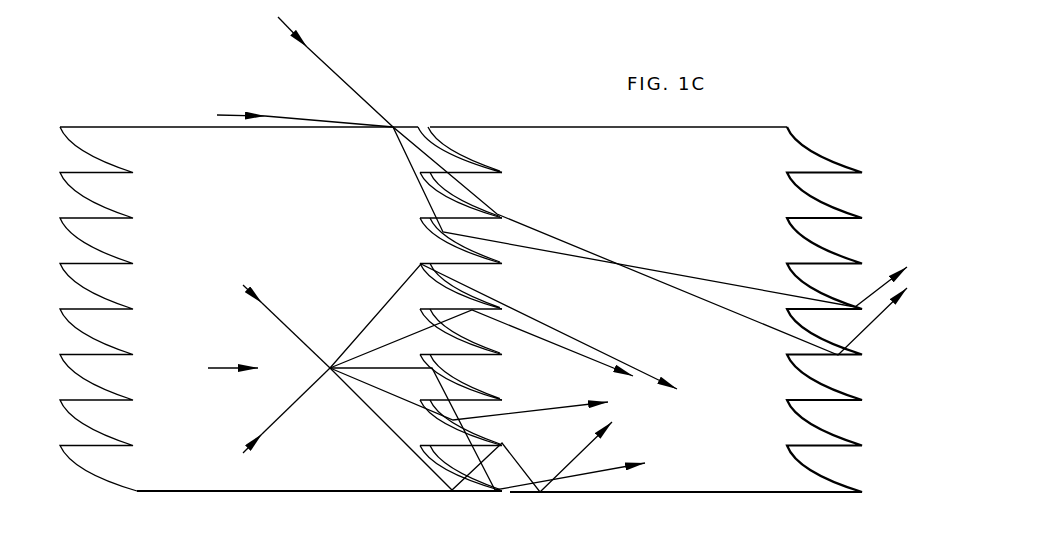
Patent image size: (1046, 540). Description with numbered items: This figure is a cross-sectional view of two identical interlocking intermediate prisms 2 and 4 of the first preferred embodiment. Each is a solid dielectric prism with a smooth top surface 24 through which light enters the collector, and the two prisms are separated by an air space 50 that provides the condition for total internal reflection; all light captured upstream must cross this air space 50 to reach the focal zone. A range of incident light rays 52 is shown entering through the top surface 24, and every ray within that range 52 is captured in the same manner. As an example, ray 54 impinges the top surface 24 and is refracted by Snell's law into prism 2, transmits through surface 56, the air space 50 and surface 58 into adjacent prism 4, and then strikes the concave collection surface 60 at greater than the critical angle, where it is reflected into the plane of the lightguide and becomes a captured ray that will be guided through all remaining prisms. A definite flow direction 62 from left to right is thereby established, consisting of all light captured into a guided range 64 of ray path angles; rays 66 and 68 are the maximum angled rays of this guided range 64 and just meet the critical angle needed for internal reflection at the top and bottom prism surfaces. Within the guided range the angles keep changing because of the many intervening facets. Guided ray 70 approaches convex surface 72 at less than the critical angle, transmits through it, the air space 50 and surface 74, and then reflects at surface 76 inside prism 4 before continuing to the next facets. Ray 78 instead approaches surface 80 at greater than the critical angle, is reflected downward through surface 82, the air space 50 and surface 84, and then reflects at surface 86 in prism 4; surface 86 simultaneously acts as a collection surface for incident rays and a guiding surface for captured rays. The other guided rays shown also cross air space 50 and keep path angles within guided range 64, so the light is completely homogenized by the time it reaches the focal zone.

The intermediate prism 2 is at (194, 178).
The intermediate prism 4 is at (715, 178).
The top surface 24 is at (146, 125).
The air space 50 is at (424, 124).
The range of incident light rays 52 is at (324, 109).
The ray 54 is at (281, 20).
The surface 56 is at (428, 212).
The surface 58 is at (468, 221).
The concave collection surface 60 is at (483, 253).
The flow direction 62 is at (195, 378).
The guided range 64 is at (303, 378).
The ray 66 is at (238, 282).
The ray 68 is at (238, 458).
The guided ray 70 is at (383, 340).
The convex surface 72 is at (387, 316).
The surface 74 is at (487, 342).
The surface 76 is at (474, 312).
The ray 78 is at (383, 393).
The surface 80 is at (483, 437).
The surface 82 is at (437, 442).
The surface 84 is at (482, 449).
The surface 86 is at (452, 460).